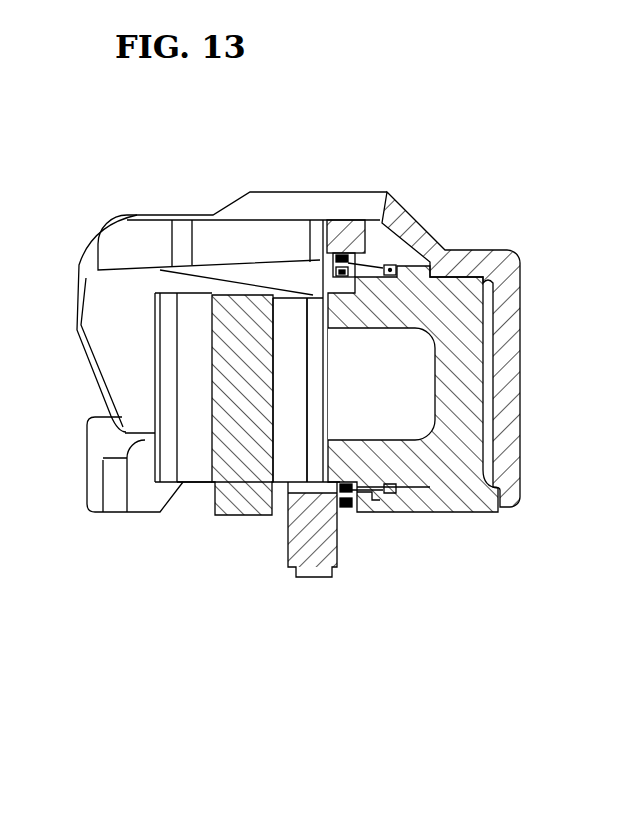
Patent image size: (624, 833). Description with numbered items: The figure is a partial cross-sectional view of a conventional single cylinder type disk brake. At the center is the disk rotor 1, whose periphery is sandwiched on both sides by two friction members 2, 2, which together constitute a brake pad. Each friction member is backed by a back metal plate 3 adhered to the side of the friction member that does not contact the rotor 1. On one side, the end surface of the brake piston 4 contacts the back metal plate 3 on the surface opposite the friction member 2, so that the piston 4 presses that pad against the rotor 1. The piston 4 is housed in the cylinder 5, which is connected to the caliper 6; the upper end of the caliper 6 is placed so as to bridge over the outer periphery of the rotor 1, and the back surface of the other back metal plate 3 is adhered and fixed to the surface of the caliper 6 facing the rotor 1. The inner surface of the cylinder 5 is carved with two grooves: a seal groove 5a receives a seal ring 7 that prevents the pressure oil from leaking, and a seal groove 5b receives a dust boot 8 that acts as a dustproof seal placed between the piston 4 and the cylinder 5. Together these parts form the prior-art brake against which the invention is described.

The disk rotor 1 is at (235, 498).
The friction member 2 is at (195, 468).
The back metal plate 3 is at (167, 307).
The brake piston 4 is at (440, 307).
The cylinder 5 is at (506, 258).
The seal groove 5a is at (368, 495).
The seal groove 5b is at (344, 265).
The caliper 6 is at (86, 278).
The seal ring 7 is at (388, 270).
The dust boot 8 is at (345, 262).